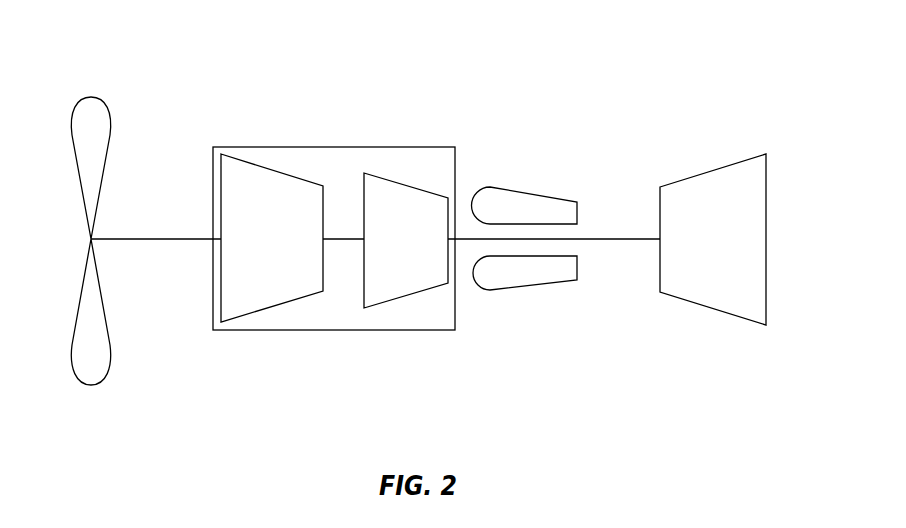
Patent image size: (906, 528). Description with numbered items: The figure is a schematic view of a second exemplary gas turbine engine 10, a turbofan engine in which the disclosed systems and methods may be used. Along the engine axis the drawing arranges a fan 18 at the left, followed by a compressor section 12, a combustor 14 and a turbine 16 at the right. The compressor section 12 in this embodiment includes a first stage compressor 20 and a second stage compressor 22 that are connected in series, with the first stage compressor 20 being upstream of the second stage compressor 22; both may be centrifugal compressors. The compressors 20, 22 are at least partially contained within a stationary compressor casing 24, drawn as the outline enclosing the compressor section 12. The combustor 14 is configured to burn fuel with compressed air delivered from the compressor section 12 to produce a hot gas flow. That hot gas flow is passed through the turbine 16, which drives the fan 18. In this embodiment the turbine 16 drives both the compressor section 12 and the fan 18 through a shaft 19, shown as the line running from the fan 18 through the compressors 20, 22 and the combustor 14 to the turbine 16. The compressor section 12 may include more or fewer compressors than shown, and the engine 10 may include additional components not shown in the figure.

The gas turbine engine 10 is at (528, 77).
The compressor section 12 is at (258, 140).
The combustor 14 is at (540, 285).
The turbine 16 is at (734, 293).
The fan 18 is at (80, 97).
The shaft 19 is at (605, 239).
The first stage compressor 20 is at (255, 283).
The second stage compressor 22 is at (401, 272).
The compressor casing 24 is at (380, 147).